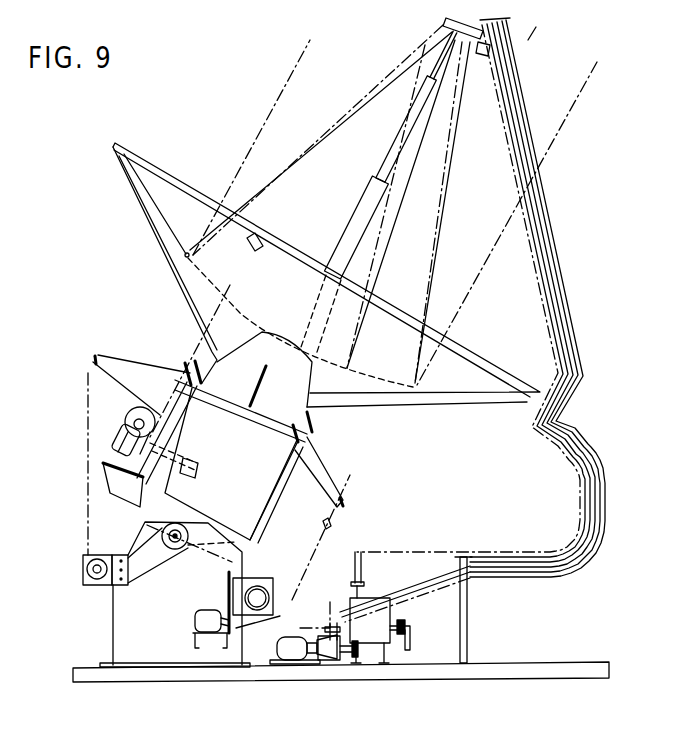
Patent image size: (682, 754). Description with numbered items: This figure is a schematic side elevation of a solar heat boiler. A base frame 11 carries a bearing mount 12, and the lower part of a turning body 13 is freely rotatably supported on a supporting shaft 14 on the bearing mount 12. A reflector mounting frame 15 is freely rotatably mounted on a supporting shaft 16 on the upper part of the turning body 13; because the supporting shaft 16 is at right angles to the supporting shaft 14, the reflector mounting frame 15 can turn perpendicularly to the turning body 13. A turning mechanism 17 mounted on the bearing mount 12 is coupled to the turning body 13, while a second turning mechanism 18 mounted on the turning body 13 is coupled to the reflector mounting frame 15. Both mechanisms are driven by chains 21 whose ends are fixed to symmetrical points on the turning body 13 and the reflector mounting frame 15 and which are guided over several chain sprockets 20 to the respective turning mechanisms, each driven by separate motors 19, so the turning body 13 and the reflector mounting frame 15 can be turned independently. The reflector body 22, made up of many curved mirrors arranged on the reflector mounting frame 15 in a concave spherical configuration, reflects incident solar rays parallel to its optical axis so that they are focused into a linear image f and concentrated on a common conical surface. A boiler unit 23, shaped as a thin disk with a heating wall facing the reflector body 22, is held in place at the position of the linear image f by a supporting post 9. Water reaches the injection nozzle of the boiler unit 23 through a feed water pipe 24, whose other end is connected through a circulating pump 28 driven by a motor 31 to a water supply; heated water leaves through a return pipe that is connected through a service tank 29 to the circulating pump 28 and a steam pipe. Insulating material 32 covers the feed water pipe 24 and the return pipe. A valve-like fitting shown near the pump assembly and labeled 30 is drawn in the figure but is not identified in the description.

The supporting post 9 is at (358, 200).
The base frame 11 is at (75, 682).
The bearing mount 12 is at (112, 628).
The turning body 13 is at (314, 443).
The supporting shaft 14 is at (162, 530).
The reflector mounting frame 15 is at (152, 236).
The supporting shaft 16 is at (314, 408).
The turning mechanism 17 is at (272, 596).
The turning mechanism 18 is at (123, 421).
The motor 19 is at (113, 450).
The chain sprocket 20 is at (88, 555).
The chain 21 is at (88, 375).
The reflector body 22 is at (183, 250).
The boiler unit 23 is at (445, 26).
The feed water pipe 24 is at (534, 190).
The circulating pump 28 is at (332, 668).
The service tank 29 is at (541, 293).
The valve 30 is at (418, 628).
The motor 31 is at (285, 668).
The insulating material 32 is at (558, 250).
The linear image f is at (514, 45).